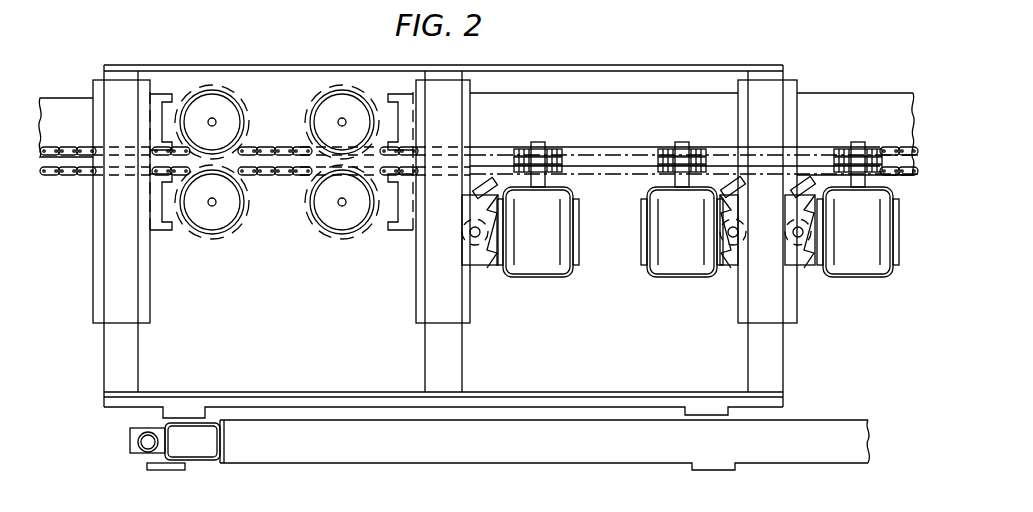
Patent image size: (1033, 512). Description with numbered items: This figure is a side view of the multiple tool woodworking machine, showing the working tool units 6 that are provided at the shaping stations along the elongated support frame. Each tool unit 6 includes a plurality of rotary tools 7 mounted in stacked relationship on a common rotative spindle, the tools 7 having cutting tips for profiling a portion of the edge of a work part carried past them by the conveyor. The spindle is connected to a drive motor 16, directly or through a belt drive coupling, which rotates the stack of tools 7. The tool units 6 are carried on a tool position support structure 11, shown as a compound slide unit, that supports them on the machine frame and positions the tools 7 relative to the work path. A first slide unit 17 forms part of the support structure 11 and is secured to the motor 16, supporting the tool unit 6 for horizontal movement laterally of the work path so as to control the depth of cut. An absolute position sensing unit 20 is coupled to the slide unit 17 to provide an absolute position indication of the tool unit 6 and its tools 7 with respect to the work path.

The working tool unit 6 is at (542, 133).
The rotary tool 7 is at (567, 157).
The tool position support structure 11 is at (478, 270).
The drive motor 16 is at (548, 248).
The first slide unit 17 is at (487, 260).
The absolute position sensing unit 20 is at (482, 178).